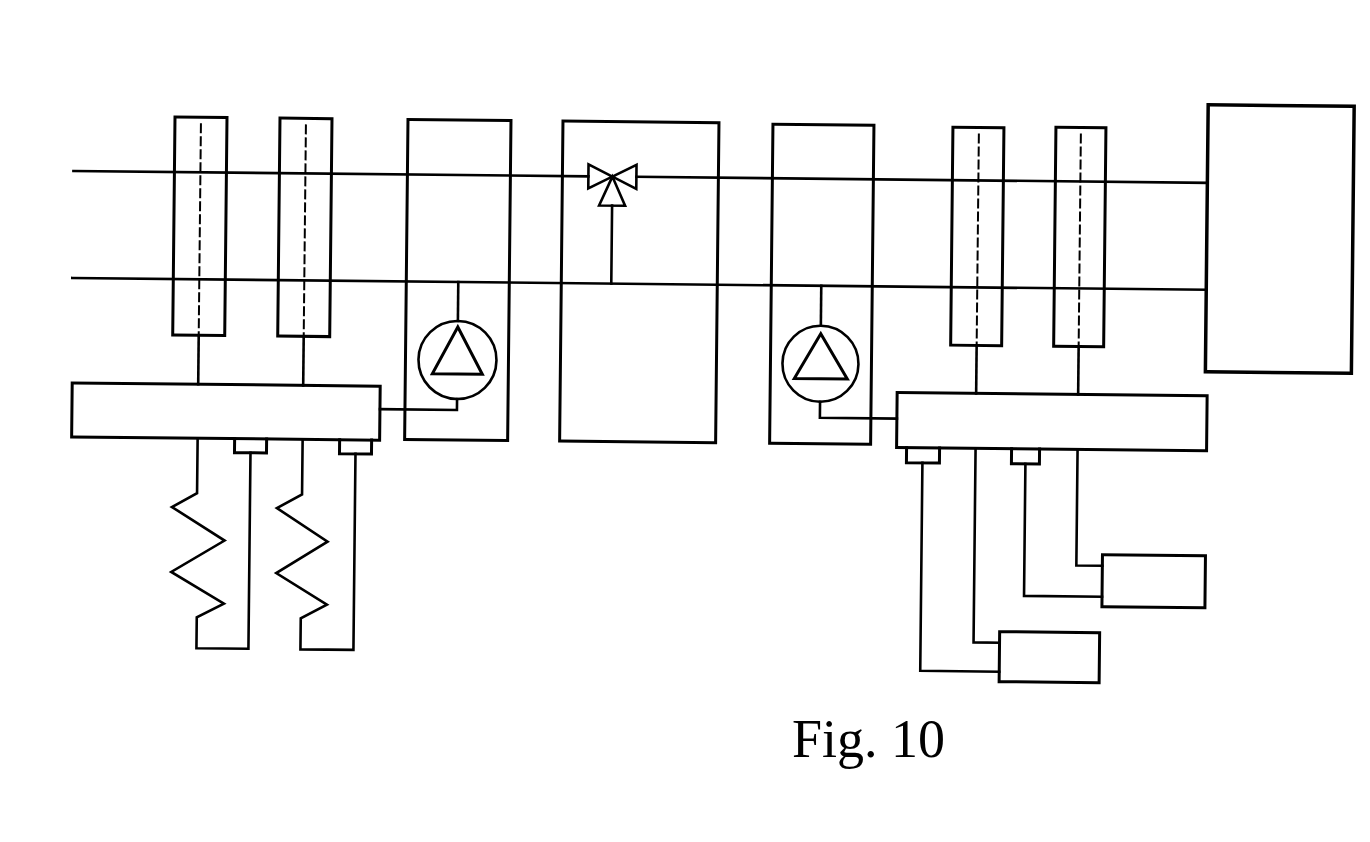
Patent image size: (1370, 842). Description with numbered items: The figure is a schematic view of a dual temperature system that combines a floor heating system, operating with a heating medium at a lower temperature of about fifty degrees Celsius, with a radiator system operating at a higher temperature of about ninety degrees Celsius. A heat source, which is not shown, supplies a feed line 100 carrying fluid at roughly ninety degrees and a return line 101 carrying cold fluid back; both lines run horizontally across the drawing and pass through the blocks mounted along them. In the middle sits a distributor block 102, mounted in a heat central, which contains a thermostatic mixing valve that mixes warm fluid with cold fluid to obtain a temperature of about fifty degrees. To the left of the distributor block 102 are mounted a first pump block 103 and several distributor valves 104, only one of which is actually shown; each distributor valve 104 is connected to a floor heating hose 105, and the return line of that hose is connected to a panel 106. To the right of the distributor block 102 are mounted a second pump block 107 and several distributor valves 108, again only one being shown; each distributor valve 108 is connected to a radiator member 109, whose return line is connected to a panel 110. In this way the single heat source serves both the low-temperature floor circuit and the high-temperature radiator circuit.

The feed line 100 is at (1124, 170).
The return line 101 is at (1124, 279).
The distributor block 102 is at (623, 117).
The first pump block 103 is at (449, 117).
The distributor valve 104 is at (315, 117).
The floor heating hose 105 is at (193, 583).
The panel 106 is at (129, 438).
The second pump block 107 is at (814, 118).
The distributor valve 108 is at (972, 119).
The radiator member 109 is at (1105, 650).
The panel 110 is at (1121, 440).